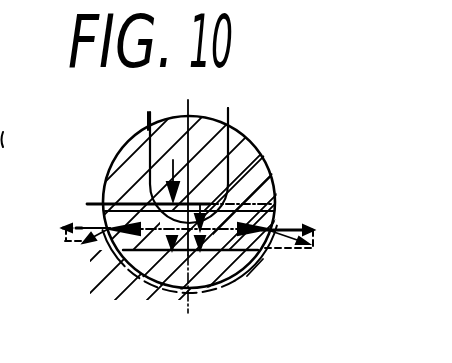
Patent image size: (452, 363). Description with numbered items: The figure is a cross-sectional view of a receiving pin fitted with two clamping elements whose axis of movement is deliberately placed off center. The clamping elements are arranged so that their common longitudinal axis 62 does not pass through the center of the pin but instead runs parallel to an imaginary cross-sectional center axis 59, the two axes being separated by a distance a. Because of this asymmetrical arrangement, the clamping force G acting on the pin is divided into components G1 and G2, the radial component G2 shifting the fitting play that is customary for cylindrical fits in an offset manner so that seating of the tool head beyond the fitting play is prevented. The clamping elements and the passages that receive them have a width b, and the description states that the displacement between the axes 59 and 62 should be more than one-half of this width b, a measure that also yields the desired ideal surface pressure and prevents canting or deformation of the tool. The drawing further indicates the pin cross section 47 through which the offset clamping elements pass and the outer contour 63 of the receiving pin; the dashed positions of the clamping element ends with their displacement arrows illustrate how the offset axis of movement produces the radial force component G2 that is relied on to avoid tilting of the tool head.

The imaginary cross-sectional axis 59 is at (101, 201).
The sleeve 63 is at (113, 200).
The common longitudinal axis of the clamping elements 62 is at (224, 286).
The slot 47 is at (189, 284).
The distance a is at (151, 101).
The width b is at (233, 98).
The force component G1 is at (82, 228).
The force G is at (92, 242).
The radial force component G2 is at (108, 242).